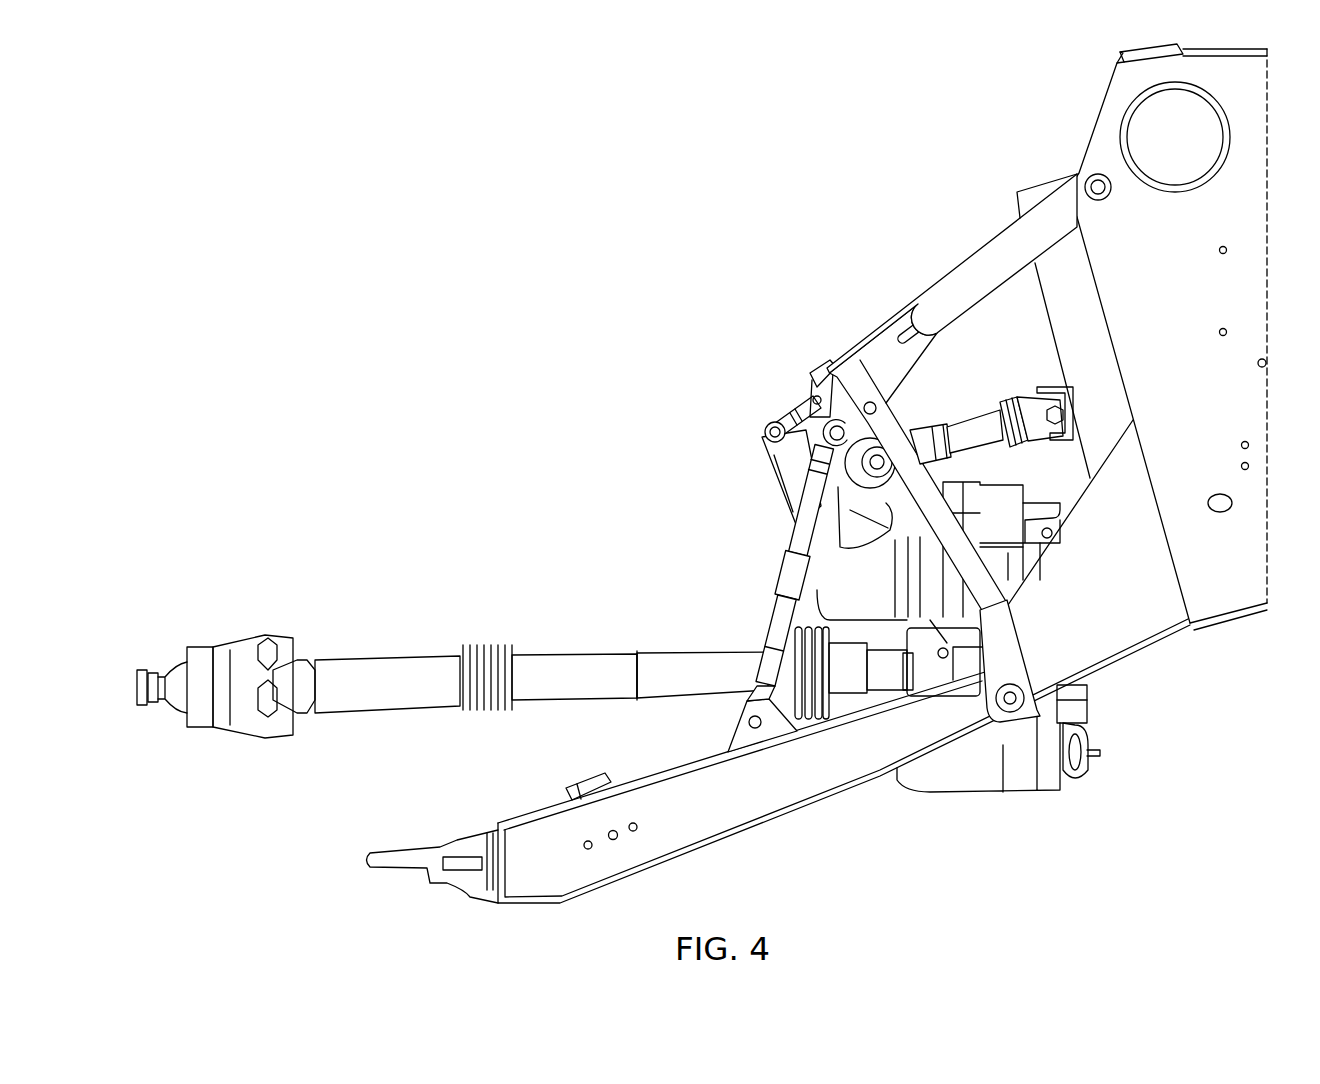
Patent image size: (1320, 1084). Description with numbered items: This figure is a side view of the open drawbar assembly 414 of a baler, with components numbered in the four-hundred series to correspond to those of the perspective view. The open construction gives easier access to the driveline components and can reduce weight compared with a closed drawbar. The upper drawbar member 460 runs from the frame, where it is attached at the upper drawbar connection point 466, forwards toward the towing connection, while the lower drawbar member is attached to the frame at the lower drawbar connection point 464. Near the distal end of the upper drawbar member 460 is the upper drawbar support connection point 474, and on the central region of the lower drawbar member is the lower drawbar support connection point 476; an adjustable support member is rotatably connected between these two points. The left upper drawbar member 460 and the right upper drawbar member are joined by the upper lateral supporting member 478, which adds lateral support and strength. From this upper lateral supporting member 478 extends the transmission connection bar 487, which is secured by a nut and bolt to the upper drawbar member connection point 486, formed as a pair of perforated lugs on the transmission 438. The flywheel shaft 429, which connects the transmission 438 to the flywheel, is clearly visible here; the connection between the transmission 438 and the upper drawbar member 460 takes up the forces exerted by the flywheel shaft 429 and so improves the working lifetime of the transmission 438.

The upper drawbar connection point 466 is at (1094, 186).
The upper drawbar member 460 is at (998, 268).
The drawbar assembly 414 is at (862, 328).
The flywheel shaft 429 is at (987, 422).
The upper drawbar support connection point 474 is at (805, 380).
The upper lateral supporting member 478 is at (828, 362).
The transmission connection bar 487 is at (798, 410).
The upper drawbar member connection point 486 is at (768, 430).
The transmission 438 is at (773, 500).
The lower drawbar support connection point 476 is at (756, 730).
The lower drawbar connection point 464 is at (1012, 712).